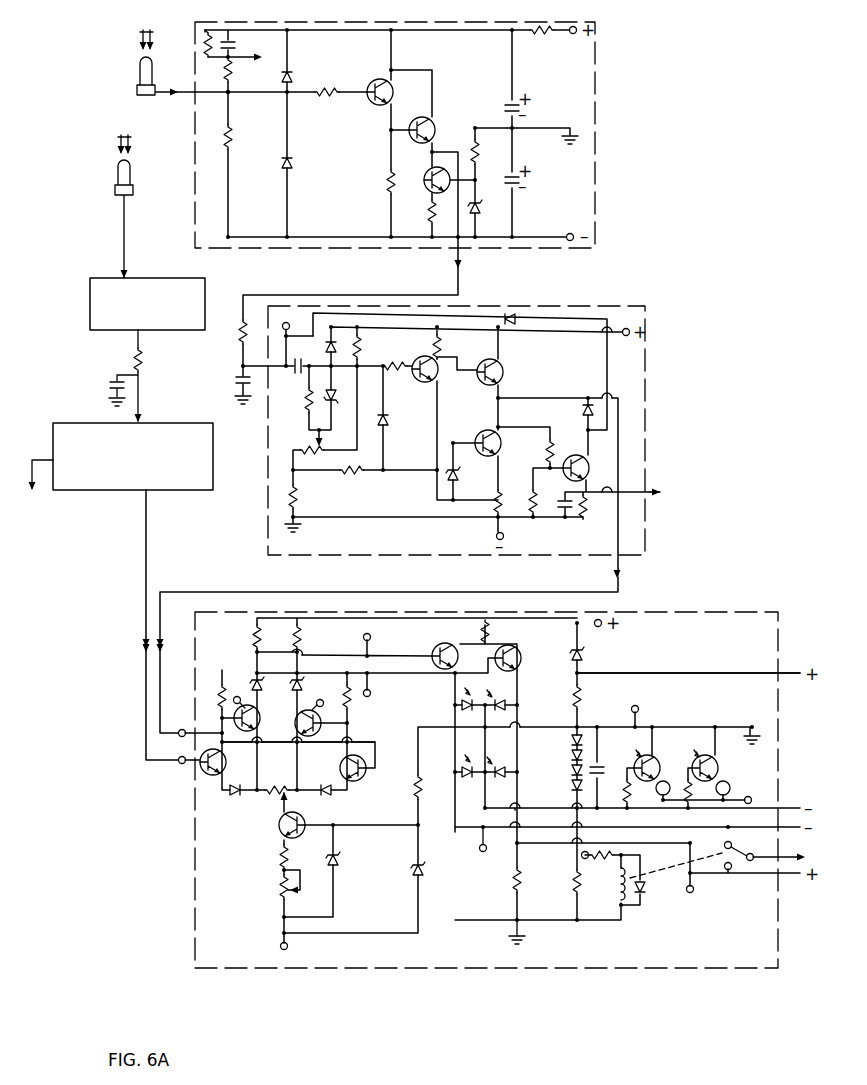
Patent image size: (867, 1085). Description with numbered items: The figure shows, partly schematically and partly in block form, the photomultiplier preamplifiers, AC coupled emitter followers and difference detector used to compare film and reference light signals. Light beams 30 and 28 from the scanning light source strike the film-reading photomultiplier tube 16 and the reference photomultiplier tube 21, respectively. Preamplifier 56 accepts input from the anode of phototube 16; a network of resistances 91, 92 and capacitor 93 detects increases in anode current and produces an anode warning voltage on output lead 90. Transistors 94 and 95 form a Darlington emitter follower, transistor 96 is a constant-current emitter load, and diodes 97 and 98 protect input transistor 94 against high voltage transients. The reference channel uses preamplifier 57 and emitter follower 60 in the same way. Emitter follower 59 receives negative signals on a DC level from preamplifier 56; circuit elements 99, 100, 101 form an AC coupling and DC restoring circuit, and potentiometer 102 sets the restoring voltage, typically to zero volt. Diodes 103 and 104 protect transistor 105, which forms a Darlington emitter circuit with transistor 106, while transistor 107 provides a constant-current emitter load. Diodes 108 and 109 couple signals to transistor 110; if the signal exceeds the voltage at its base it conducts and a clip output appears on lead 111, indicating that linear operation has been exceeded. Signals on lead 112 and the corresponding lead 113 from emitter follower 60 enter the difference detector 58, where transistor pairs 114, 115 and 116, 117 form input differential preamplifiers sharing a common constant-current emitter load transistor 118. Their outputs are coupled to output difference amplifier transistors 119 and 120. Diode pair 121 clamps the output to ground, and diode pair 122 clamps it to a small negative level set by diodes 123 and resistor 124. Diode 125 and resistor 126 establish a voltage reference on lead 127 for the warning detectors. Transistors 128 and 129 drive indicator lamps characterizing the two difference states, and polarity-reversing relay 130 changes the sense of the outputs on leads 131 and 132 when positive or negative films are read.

The film-reading photomultiplier tube 16 is at (140, 82).
The reference photomultiplier tube 21 is at (116, 181).
The light beam 28 is at (117, 147).
The light beam 30 is at (135, 43).
The preamplifier 56 is at (597, 143).
The preamplifier 57 is at (90, 305).
The difference detector 58 is at (680, 612).
The AC coupled emitter follower 59 is at (645, 398).
The AC coupled emitter follower 60 is at (125, 492).
The output lead 90 is at (243, 83).
The resistance 91 is at (226, 70).
The resistance 92 is at (205, 43).
The capacitor 93 is at (265, 57).
The transistor 94 is at (369, 102).
The transistor 95 is at (460, 117).
The transistor 96 is at (425, 190).
The diode 97 is at (292, 77).
The diode 98 is at (292, 166).
The circuit element 99 is at (286, 378).
The circuit element 100 is at (290, 405).
The circuit element 101 is at (336, 397).
The potentiometer 102 is at (306, 446).
The diode 103 is at (338, 346).
The diode 104 is at (388, 424).
The transistor 105 is at (416, 382).
The transistor 106 is at (503, 366).
The transistor 107 is at (499, 450).
The diode 108 is at (581, 410).
The diode 109 is at (537, 308).
The transistor 110 is at (604, 463).
The lead 111 is at (648, 492).
The lead 112 is at (185, 590).
The lead 113 is at (145, 596).
The transistor 114 is at (245, 733).
The transistor 115 is at (202, 772).
The transistor 116 is at (312, 737).
The transistor 117 is at (362, 782).
The constant-current emitter load transistor 118 is at (278, 835).
The output difference amplifier transistor 119 is at (434, 647).
The output difference amplifier transistor 120 is at (521, 655).
The diode pair 121 is at (465, 693).
The diode pair 122 is at (497, 757).
The diodes 123 is at (573, 750).
The resistor 124 is at (572, 887).
The diode 125 is at (583, 655).
The resistor 126 is at (580, 695).
The lead 127 is at (700, 673).
The transistor 128 is at (670, 756).
The transistor 129 is at (719, 770).
The relay 130 is at (631, 898).
The lead 131 is at (738, 843).
The lead 132 is at (734, 873).